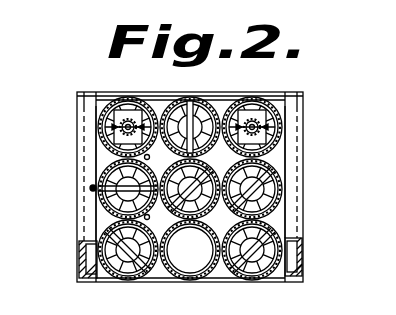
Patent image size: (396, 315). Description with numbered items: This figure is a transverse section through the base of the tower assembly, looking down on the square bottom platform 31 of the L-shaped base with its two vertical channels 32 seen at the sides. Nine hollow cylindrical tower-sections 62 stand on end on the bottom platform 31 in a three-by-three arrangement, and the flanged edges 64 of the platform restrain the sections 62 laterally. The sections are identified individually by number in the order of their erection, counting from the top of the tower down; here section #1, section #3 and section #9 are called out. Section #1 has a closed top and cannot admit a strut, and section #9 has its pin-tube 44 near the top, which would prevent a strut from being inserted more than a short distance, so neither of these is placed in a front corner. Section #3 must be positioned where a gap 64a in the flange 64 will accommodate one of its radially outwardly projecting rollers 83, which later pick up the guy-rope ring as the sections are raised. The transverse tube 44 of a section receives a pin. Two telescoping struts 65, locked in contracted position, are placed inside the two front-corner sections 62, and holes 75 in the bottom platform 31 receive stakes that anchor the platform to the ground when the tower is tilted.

The bottom platform 31 is at (278, 91).
The vertical channels 32 is at (83, 262).
The transverse tube 44 is at (117, 195).
The tower-sections 62 is at (106, 108).
The flanged edges 64 is at (290, 195).
The gap 64a is at (97, 182).
The telescoping struts 65 is at (133, 122).
The holes 75 is at (100, 96).
The rollers 83 is at (90, 189).
The tower-section # 1 is at (280, 160).
The tower-section # 3 is at (95, 157).
The tower-section # 9 is at (181, 278).